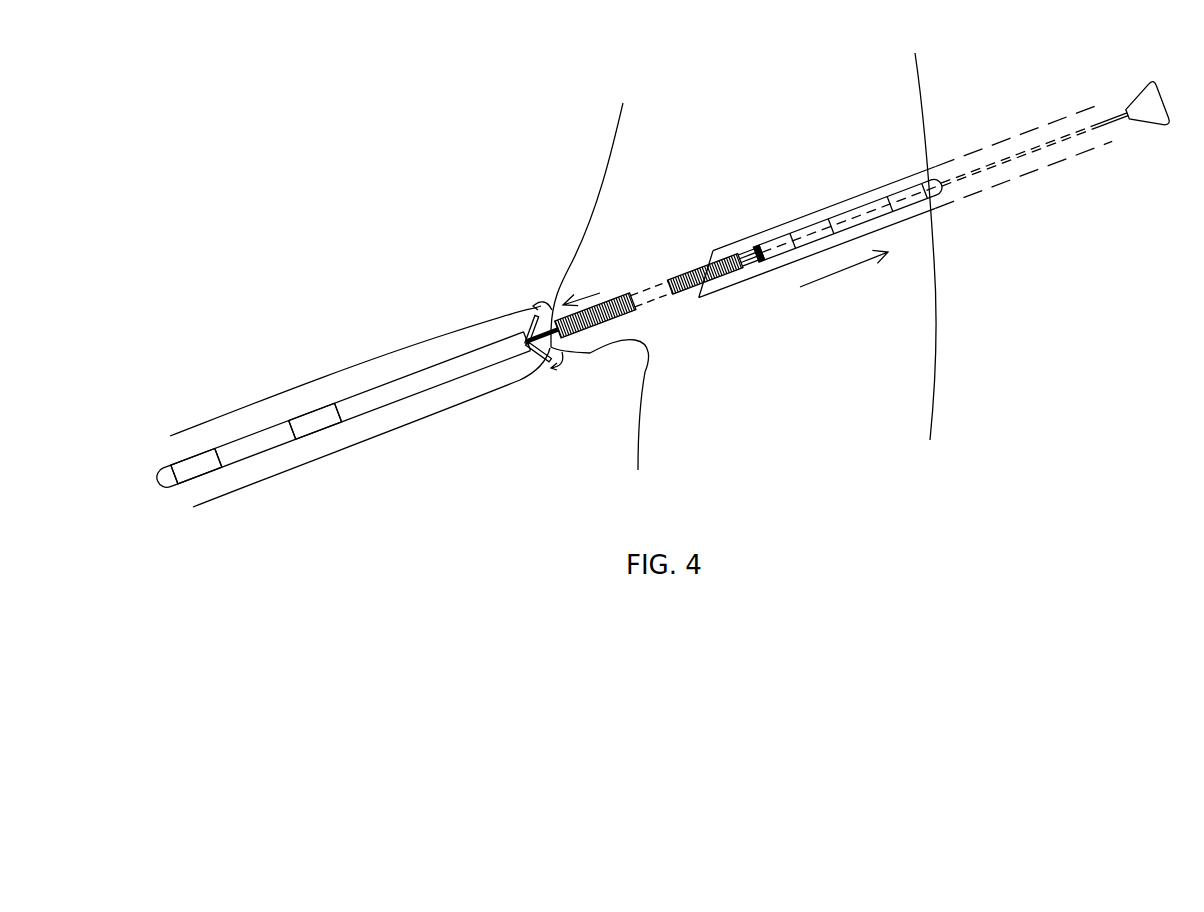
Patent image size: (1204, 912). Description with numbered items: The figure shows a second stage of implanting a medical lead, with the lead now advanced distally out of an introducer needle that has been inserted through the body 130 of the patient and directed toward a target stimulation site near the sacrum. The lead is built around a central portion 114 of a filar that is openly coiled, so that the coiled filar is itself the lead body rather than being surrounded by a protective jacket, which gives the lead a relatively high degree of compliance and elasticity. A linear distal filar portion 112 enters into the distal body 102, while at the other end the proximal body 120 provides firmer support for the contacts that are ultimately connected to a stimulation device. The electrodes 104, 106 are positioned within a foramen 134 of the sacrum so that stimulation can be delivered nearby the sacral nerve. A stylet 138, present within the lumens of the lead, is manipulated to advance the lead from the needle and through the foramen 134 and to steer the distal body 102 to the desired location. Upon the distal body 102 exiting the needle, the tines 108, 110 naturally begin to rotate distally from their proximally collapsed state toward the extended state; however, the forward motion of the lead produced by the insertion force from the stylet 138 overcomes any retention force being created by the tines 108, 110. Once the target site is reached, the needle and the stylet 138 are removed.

The distal body 102 is at (265, 452).
The electrode 104 is at (193, 464).
The electrode 106 is at (320, 428).
The tine 108 is at (531, 321).
The tine 110 is at (529, 372).
The distal filar portion 112 is at (558, 318).
The central portion of a filar 114 is at (622, 298).
The proximal body 120 is at (786, 244).
The body 130 is at (903, 112).
The foramen 134 is at (458, 339).
The stylet 138 is at (1001, 163).